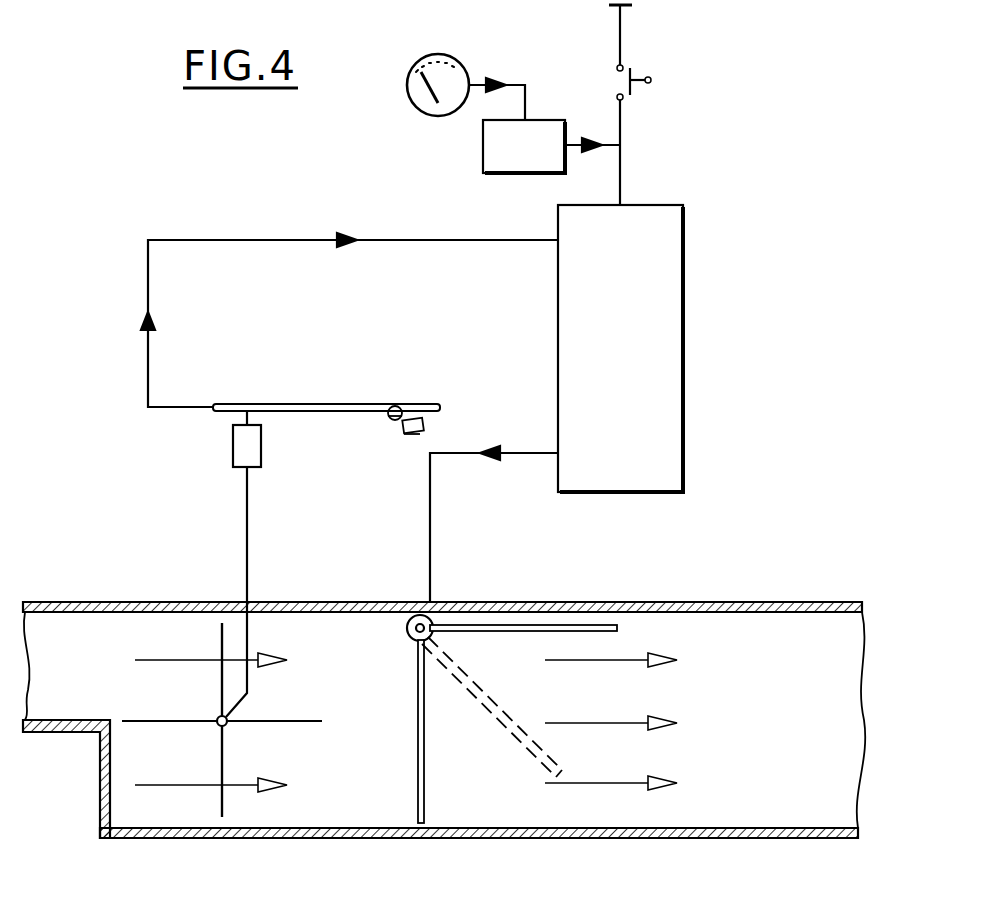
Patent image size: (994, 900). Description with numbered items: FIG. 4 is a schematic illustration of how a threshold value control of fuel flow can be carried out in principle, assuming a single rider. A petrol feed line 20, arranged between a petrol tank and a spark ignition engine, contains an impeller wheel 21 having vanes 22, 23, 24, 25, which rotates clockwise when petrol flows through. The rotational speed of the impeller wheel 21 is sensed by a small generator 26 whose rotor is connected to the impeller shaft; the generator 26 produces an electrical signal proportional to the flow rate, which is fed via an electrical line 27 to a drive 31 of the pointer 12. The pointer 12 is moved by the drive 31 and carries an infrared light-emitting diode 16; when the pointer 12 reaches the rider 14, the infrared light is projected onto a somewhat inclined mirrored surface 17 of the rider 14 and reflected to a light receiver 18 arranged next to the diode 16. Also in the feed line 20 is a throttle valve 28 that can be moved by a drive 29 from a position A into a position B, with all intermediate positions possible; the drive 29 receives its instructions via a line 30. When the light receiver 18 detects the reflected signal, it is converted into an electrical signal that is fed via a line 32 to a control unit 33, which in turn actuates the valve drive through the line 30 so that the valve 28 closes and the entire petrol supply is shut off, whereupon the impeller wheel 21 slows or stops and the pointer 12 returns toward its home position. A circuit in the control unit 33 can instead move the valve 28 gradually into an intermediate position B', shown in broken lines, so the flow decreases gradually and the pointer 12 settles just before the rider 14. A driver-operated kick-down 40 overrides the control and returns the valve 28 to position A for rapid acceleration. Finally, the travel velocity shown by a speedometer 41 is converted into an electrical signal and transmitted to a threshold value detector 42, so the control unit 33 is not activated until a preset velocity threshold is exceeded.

The pointer 12 is at (312, 413).
The rider 14 is at (412, 444).
The light-emitting diode 16 is at (431, 404).
The mirrored surface 17 is at (400, 418).
The light receiver 18 is at (393, 404).
The petrol feed line 20 is at (683, 583).
The impeller wheel 21 is at (289, 683).
The vane 22 is at (220, 687).
The vane 23 is at (294, 723).
The vane 24 is at (220, 804).
The vane 25 is at (168, 723).
The generator 26 is at (227, 726).
The electrical line 27 is at (246, 522).
The throttle valve 28 is at (508, 648).
The drive 29 is at (410, 636).
The line 30 is at (431, 530).
The drive 31 is at (236, 448).
The line 32 is at (273, 239).
The control unit 33 is at (684, 348).
The kick-down 40 is at (640, 76).
The speedometer 41 is at (434, 54).
The threshold value detector 42 is at (517, 164).
The position A is at (616, 634).
The position B is at (394, 731).
The intermediate position B' is at (492, 707).